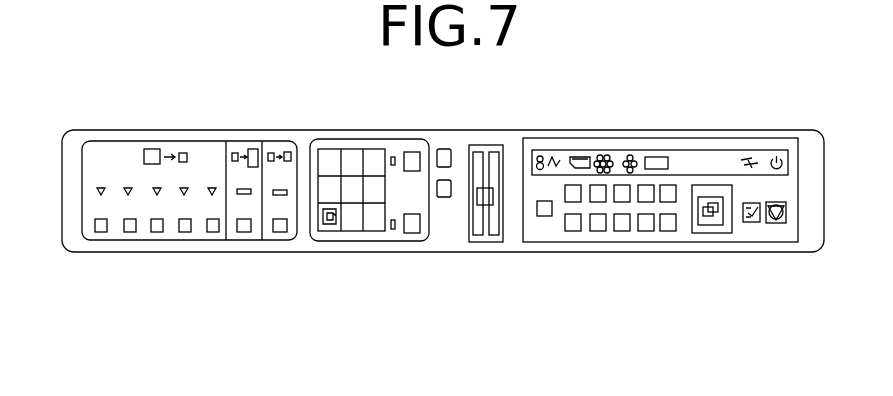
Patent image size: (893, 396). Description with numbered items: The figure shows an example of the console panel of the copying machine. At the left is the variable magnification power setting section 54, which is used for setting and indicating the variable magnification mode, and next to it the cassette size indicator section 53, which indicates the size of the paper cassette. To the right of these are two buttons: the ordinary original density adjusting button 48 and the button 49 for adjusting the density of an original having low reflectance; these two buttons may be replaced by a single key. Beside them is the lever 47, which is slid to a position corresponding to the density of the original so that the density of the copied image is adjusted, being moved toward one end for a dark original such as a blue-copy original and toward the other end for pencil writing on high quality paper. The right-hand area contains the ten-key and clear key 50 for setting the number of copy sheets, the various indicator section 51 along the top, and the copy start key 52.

The lever 47 is at (484, 205).
The ordinary original density adjusting button 48 is at (444, 149).
The low reflectance original density adjusting button 49 is at (444, 197).
The ten-key and clear key 50 is at (670, 203).
The various indicator section 51 is at (778, 150).
The copy start key 52 is at (713, 225).
The cassette size indicator section 53 is at (375, 240).
The variable magnification power setting section 54 is at (203, 240).